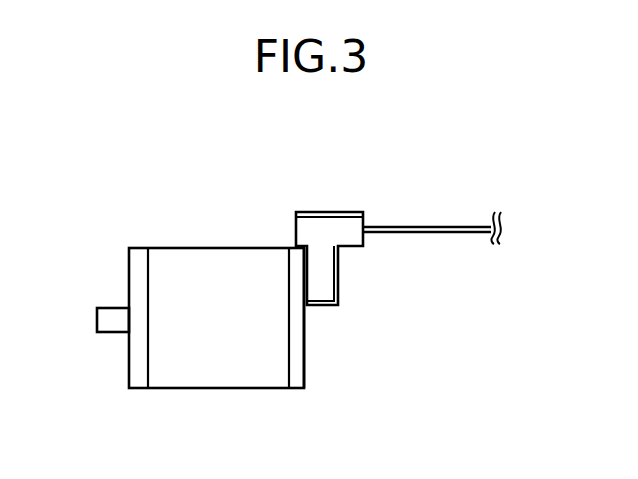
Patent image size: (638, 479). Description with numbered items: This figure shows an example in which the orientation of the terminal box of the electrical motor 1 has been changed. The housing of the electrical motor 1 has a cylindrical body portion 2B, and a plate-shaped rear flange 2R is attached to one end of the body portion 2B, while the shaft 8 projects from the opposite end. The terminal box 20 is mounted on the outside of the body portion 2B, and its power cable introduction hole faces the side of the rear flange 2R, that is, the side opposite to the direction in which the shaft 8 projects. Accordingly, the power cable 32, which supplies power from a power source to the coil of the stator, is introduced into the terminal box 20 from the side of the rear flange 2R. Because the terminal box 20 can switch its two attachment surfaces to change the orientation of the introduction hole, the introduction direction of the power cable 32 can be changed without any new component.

The electrical motor 1 is at (121, 187).
The body portion 2B is at (218, 375).
The rear flange 2R is at (298, 375).
The shaft 8 is at (107, 322).
The terminal box 20 is at (327, 228).
The power cable 32 is at (452, 234).